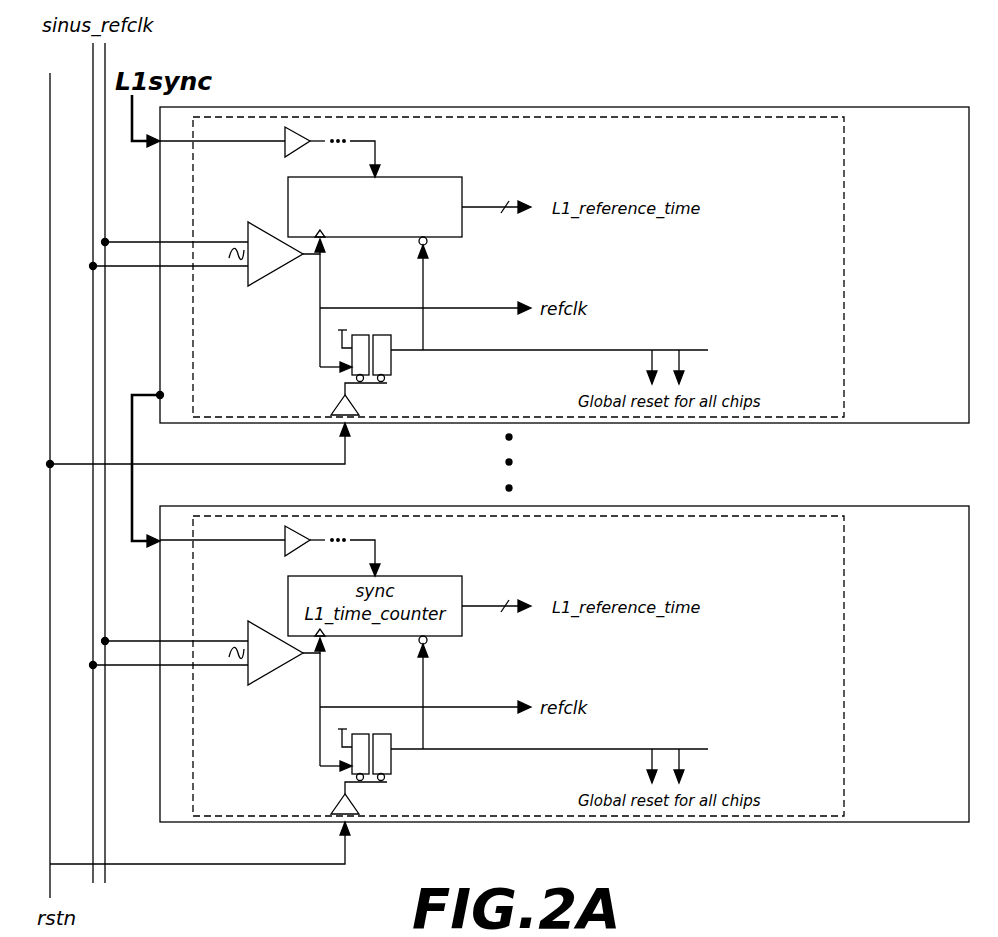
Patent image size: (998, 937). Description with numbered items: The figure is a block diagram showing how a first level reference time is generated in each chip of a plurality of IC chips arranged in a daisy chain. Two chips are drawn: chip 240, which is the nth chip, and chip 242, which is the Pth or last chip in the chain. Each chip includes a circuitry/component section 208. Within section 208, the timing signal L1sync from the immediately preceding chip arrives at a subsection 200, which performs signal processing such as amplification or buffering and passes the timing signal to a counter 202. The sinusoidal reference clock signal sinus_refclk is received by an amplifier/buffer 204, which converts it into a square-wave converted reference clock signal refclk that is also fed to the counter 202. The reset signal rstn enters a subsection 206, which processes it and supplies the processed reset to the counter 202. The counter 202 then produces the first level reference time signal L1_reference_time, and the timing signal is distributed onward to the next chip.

The subsection 200 is at (283, 152).
The counter 202 is at (440, 177).
The amplifier/buffer 204 is at (280, 274).
The subsection 206 is at (347, 404).
The circuitry/component section 208 is at (845, 262).
The chip 240 is at (735, 107).
The chip 242 is at (728, 506).